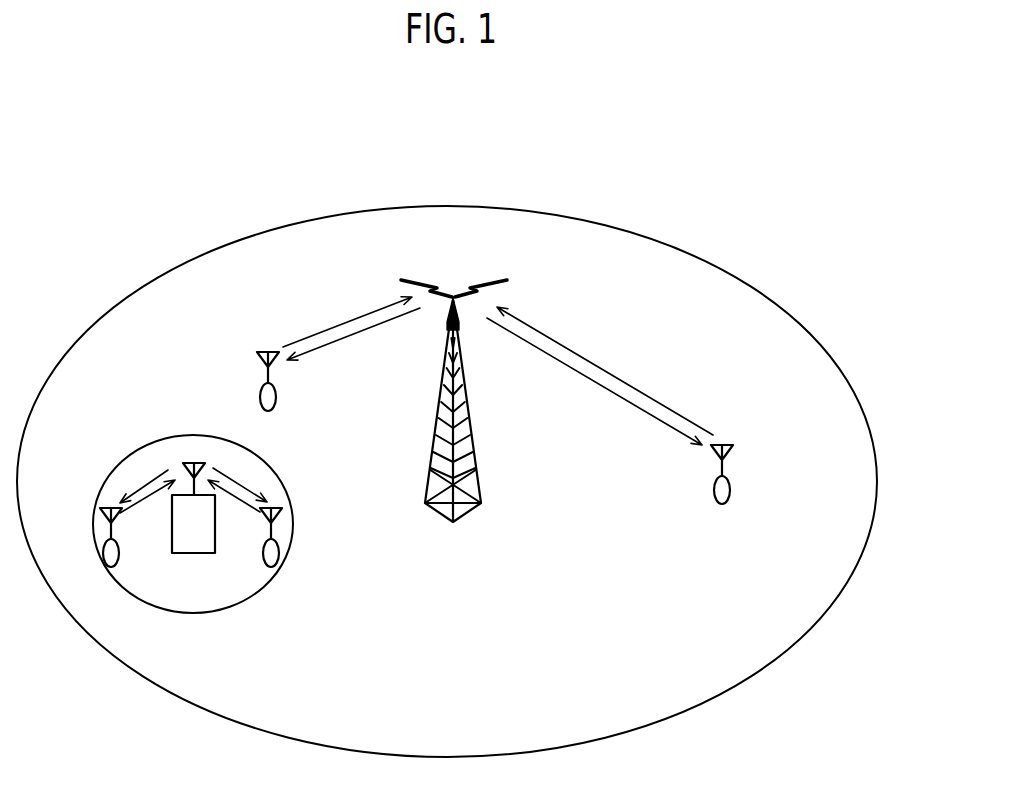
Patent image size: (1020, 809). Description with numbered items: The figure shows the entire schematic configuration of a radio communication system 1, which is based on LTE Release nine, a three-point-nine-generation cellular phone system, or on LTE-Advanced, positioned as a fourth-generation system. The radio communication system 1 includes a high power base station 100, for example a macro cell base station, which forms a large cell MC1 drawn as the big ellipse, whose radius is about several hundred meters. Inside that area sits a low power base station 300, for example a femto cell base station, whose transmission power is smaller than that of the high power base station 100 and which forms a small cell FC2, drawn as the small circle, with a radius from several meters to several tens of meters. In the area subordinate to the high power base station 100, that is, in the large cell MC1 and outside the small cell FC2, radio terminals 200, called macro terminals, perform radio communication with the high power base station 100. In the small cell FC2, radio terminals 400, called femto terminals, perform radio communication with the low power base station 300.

The radio communication system 1 is at (677, 143).
The large cell MC1 is at (705, 259).
The small cell FC2 is at (100, 490).
The high power base station 100 is at (474, 455).
The radio terminals 200 is at (268, 348).
The low power base station 300 is at (192, 460).
The radio terminals 400 is at (117, 556).